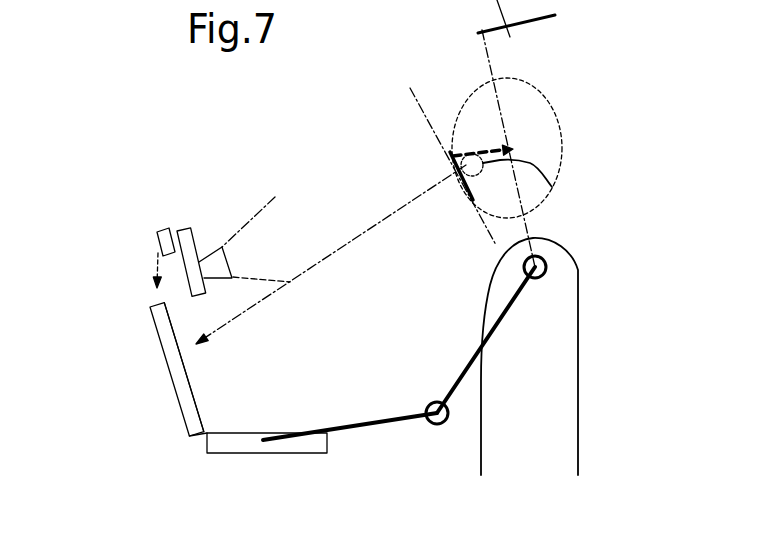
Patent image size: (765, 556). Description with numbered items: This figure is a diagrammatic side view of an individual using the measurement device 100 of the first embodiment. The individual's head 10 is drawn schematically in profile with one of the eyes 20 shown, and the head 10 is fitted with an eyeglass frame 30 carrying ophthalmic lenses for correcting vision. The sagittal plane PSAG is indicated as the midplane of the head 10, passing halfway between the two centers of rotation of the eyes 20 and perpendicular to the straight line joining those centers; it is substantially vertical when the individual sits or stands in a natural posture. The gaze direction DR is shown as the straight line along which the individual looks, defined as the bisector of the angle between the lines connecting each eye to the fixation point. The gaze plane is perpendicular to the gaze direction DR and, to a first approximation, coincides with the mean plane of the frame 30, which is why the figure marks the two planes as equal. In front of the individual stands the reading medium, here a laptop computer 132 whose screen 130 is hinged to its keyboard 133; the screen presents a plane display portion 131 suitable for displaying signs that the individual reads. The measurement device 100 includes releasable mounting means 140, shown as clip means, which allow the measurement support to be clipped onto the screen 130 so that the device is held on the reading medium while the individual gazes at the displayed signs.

The individual's head 10 is at (527, 107).
The eyes 20 is at (552, 187).
The eyeglass frame 30 is at (452, 152).
The measurement device 100 is at (220, 225).
The screen 130 is at (183, 419).
The plane display portion 131 is at (191, 385).
The laptop computer 132 is at (186, 451).
The keyboard 133 is at (229, 445).
The releasable mounting means 140 is at (162, 233).
The sagittal plane PSAG is at (482, 0).
The gaze direction DR is at (367, 233).